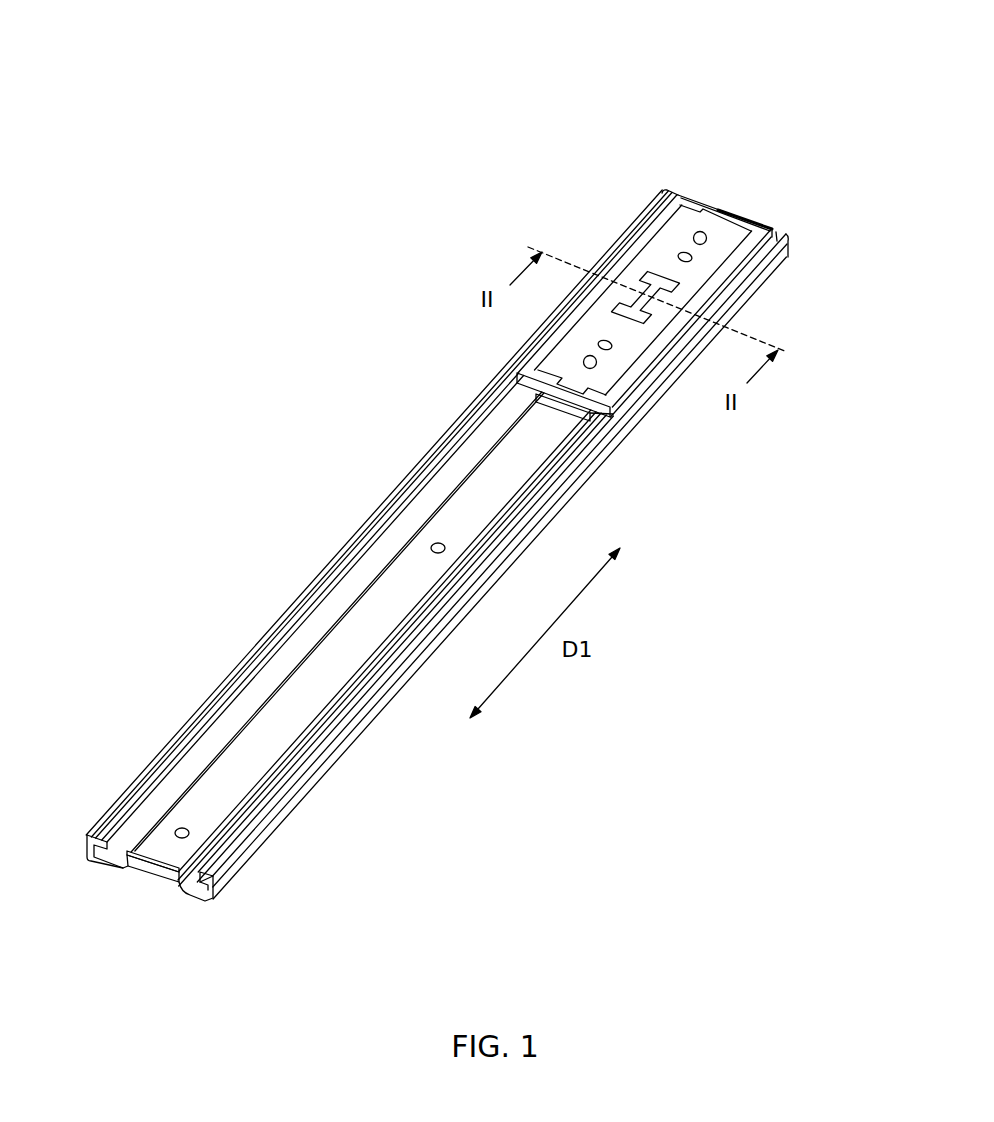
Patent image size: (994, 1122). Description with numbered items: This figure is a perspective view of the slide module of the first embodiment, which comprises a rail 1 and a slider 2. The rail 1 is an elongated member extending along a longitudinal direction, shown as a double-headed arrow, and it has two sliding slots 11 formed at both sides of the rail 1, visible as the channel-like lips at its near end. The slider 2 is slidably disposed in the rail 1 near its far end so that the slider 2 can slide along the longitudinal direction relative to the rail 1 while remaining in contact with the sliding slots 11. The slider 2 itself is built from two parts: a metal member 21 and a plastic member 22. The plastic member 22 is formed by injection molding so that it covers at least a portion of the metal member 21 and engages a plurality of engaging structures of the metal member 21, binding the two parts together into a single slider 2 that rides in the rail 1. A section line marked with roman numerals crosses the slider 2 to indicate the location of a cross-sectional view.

The rail 1 is at (414, 512).
The sliding slots 11 is at (104, 852).
The slider 2 is at (723, 199).
The metal member 21 is at (735, 232).
The plastic member 22 is at (767, 228).